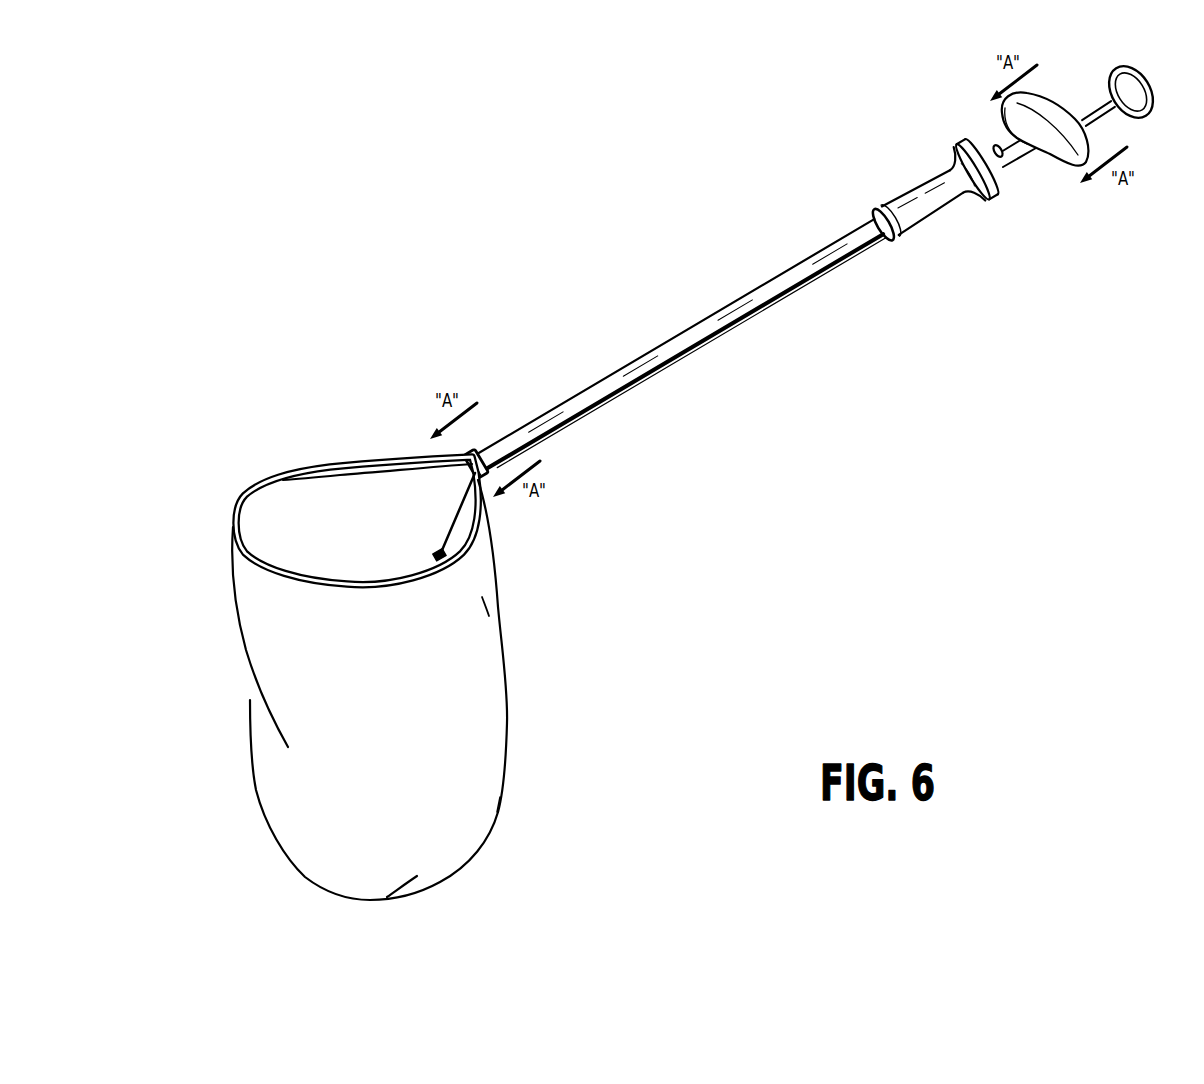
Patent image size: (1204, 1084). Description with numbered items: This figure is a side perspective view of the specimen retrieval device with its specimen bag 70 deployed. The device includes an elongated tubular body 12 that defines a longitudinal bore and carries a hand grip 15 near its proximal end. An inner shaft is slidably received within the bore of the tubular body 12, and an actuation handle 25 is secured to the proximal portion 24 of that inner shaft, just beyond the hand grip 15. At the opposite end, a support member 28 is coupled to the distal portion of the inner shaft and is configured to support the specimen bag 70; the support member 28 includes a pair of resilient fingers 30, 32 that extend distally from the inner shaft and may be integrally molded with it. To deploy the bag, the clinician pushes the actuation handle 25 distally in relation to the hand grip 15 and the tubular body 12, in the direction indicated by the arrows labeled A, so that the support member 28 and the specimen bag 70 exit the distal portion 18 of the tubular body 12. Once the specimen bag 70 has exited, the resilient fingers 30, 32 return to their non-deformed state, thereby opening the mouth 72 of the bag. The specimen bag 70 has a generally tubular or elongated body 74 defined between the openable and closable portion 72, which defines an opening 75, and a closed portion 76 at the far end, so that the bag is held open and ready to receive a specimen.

The tubular body 12 is at (796, 266).
The hand grip 15 is at (932, 178).
The distal portion 18 is at (476, 450).
The proximal portion 24 is at (997, 145).
The actuation handle 25 is at (1050, 124).
The support member 28 is at (487, 466).
The resilient finger 30 is at (357, 476).
The resilient finger 32 is at (463, 553).
The specimen bag 70 is at (520, 698).
The openable and closable portion 72 is at (291, 571).
The body 74 is at (430, 782).
The opening 75 is at (343, 518).
The closed portion 76 is at (358, 901).